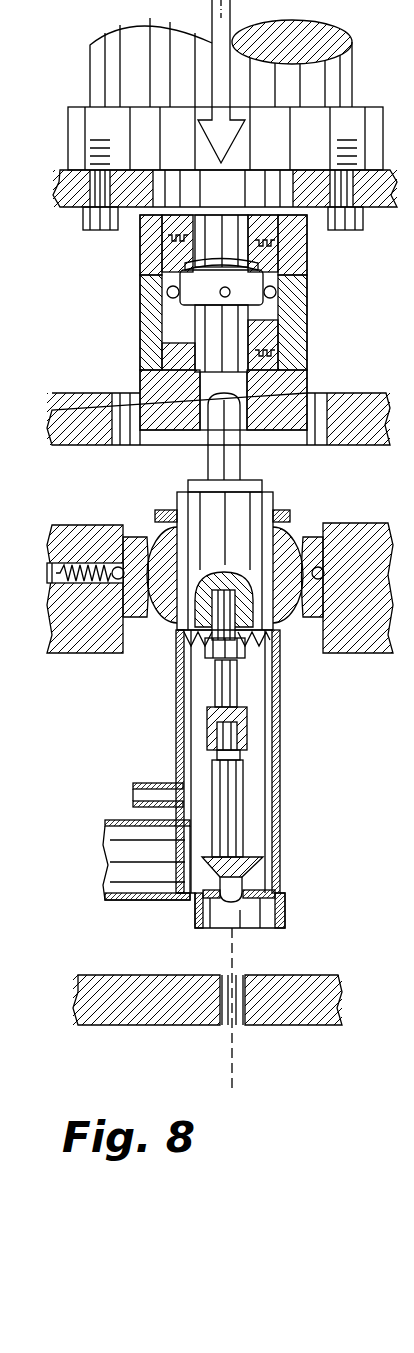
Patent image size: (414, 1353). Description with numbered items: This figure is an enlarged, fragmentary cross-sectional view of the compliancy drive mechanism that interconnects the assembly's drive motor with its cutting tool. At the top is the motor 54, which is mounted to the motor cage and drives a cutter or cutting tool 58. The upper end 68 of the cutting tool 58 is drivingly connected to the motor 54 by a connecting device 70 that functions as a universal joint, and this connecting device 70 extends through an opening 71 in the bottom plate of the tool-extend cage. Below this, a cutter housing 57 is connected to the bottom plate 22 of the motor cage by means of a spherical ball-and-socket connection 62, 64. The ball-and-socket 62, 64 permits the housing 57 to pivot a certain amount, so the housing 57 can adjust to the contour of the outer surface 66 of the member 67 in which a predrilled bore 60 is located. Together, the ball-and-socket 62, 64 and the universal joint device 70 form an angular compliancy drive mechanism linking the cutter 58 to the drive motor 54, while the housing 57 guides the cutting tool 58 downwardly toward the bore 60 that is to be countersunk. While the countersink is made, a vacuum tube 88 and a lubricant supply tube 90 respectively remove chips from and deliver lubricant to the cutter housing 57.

The motor 54 is at (333, 78).
The connecting device 70 is at (131, 325).
The opening 71 is at (332, 400).
The upper end 68 is at (236, 457).
The ball-and-socket 64 is at (141, 528).
The ball-and-socket connection 62 is at (289, 530).
The bottom plate 22 is at (346, 530).
The cutter housing 57 is at (286, 741).
The cutting tool 58 is at (236, 821).
The lubricant supply tube 90 is at (147, 783).
The vacuum tube 88 is at (147, 905).
The bore 60 is at (240, 977).
The outer surface 66 is at (327, 975).
The member 67 is at (145, 1012).